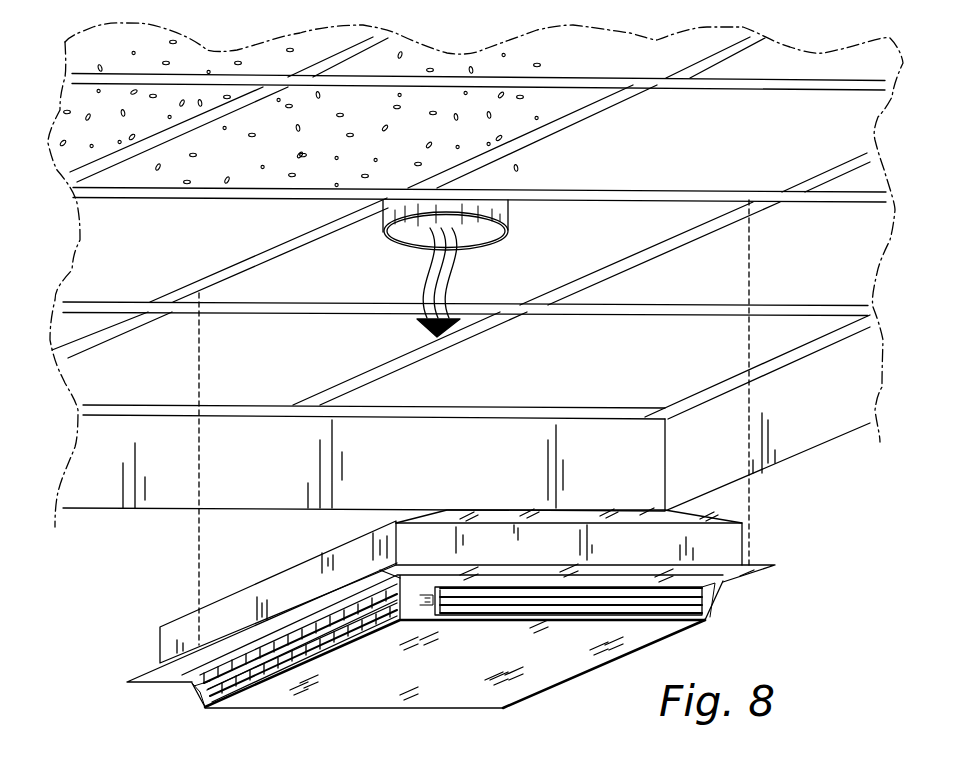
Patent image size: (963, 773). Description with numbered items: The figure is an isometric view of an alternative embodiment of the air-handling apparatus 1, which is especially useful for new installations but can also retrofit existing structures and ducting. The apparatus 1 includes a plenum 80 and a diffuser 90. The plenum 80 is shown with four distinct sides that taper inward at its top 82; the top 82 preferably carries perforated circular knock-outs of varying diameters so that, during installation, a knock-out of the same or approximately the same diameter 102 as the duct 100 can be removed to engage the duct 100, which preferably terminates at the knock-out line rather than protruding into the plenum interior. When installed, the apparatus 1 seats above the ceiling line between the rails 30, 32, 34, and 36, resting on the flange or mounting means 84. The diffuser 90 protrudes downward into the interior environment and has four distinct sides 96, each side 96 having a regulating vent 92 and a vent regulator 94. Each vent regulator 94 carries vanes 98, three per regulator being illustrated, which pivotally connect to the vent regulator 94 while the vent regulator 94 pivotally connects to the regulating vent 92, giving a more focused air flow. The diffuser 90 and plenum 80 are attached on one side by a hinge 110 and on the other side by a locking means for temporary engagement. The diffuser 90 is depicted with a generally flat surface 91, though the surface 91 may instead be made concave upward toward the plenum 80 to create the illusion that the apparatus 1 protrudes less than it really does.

The apparatus 1 is at (454, 603).
The rail 30 is at (649, 200).
The rail 32 is at (244, 307).
The rail 34 is at (316, 236).
The rail 36 is at (621, 268).
The duct 100 is at (510, 207).
The diameter 102 is at (473, 249).
The plenum 80 is at (727, 538).
The top 82 is at (693, 518).
The flange or mounting means 84 is at (745, 574).
The diffuser 90 is at (650, 628).
The surface 91 is at (430, 672).
The regulating vent 92 is at (695, 622).
The vent regulator 94 is at (222, 697).
The side 96 is at (203, 686).
The vane 98 is at (480, 613).
The hinge 110 is at (193, 667).